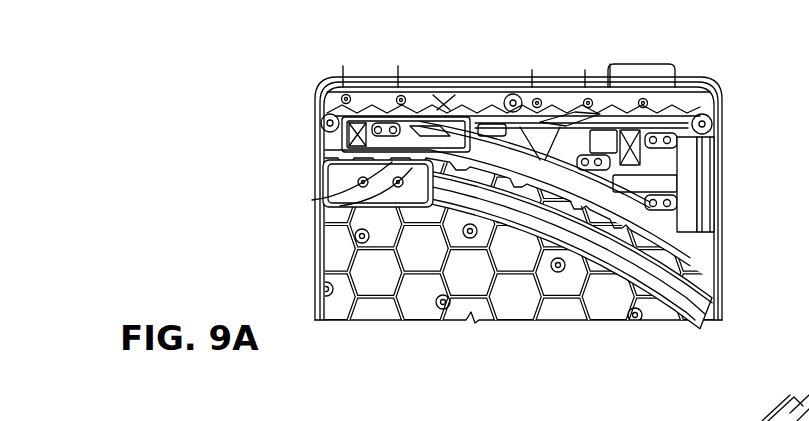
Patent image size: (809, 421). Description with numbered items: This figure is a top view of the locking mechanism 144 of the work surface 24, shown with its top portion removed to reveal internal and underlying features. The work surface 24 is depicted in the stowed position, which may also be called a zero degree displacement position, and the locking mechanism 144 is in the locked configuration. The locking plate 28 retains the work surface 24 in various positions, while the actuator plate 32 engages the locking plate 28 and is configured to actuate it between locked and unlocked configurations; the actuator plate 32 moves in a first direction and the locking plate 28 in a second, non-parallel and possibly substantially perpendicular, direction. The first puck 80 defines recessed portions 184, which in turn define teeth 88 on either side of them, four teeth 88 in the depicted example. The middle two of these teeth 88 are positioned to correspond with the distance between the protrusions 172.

The work surface 24 is at (256, 126).
The locking plate 28 is at (324, 127).
The actuator plate 32 is at (445, 110).
The first puck 80 is at (368, 212).
The teeth 88 is at (360, 173).
The locking mechanism 144 is at (722, 177).
The protrusions 172 is at (578, 185).
The recessed portions 184 is at (416, 154).